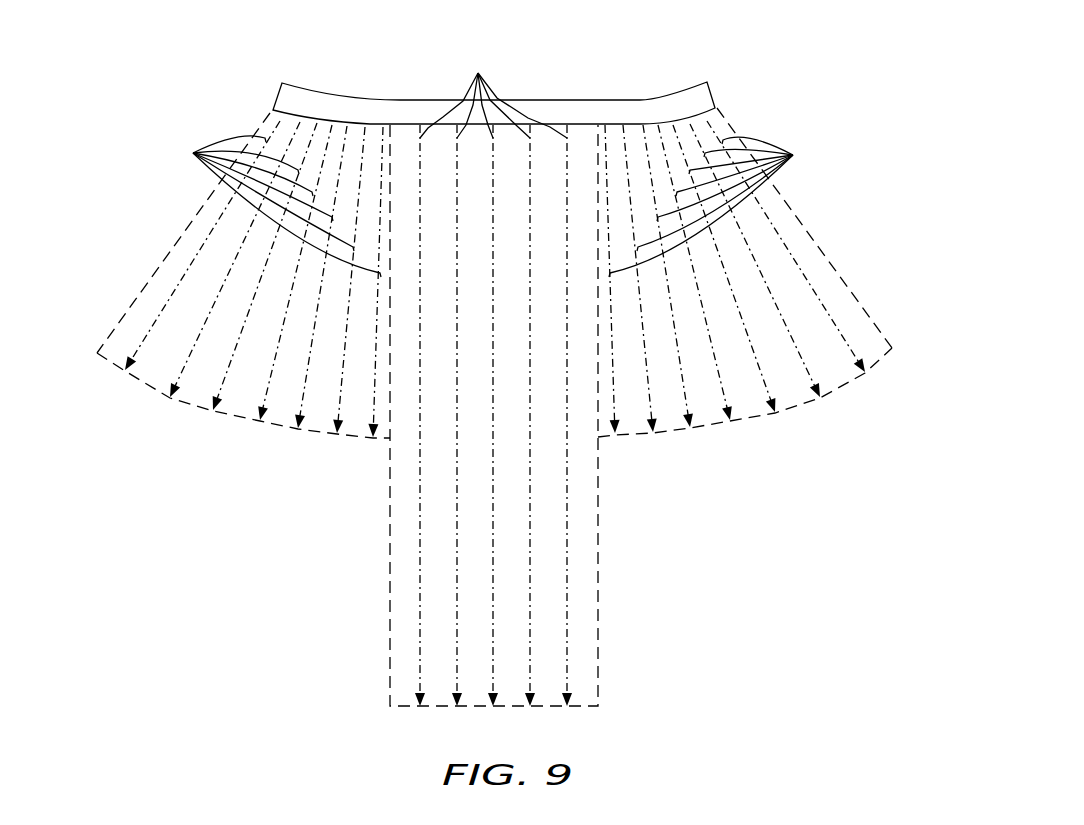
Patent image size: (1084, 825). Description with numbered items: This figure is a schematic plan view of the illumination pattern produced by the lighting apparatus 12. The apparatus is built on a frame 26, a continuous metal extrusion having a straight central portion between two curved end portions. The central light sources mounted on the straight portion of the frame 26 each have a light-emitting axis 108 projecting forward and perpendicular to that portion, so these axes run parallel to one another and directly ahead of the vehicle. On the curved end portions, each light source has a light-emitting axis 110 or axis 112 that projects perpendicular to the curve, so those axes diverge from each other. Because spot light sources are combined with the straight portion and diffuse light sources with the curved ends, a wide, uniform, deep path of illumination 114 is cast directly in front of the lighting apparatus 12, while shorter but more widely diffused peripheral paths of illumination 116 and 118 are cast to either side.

The lighting apparatus 12 is at (714, 65).
The frame 26 is at (590, 107).
The light-emitting axis 108 is at (493, 90).
The light-emitting axis 110 is at (267, 206).
The axis 112 is at (722, 207).
The path of illumination 114 is at (600, 487).
The peripheral path of illumination 116 is at (707, 430).
The peripheral path of illumination 118 is at (283, 430).